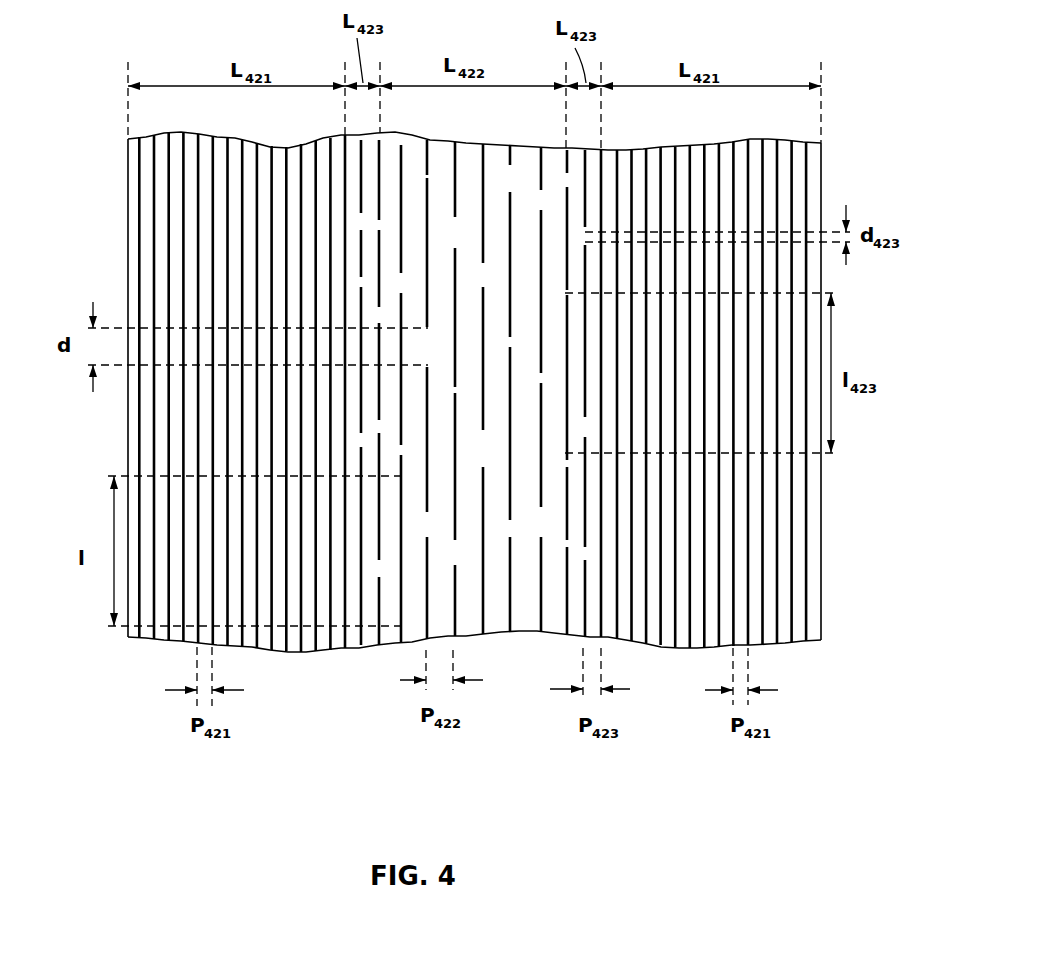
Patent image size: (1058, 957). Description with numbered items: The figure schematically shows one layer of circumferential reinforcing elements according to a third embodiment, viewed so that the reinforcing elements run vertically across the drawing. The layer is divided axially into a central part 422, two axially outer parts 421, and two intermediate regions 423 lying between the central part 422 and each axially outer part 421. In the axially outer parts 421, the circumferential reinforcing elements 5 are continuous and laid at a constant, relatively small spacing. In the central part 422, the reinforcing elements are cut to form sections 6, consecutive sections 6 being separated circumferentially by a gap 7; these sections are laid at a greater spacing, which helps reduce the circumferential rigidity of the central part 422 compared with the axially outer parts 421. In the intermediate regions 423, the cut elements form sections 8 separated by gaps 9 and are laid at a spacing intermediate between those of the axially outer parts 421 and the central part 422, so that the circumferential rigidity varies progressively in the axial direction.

The circumferential reinforcing elements 5 is at (150, 216).
The sections 6 is at (457, 179).
The gap 7 is at (512, 180).
The sections 8 is at (590, 234).
The gap 9 is at (589, 556).
The axially outer parts 421 is at (148, 652).
The central part 422 is at (471, 466).
The intermediate regions 423 is at (504, 449).